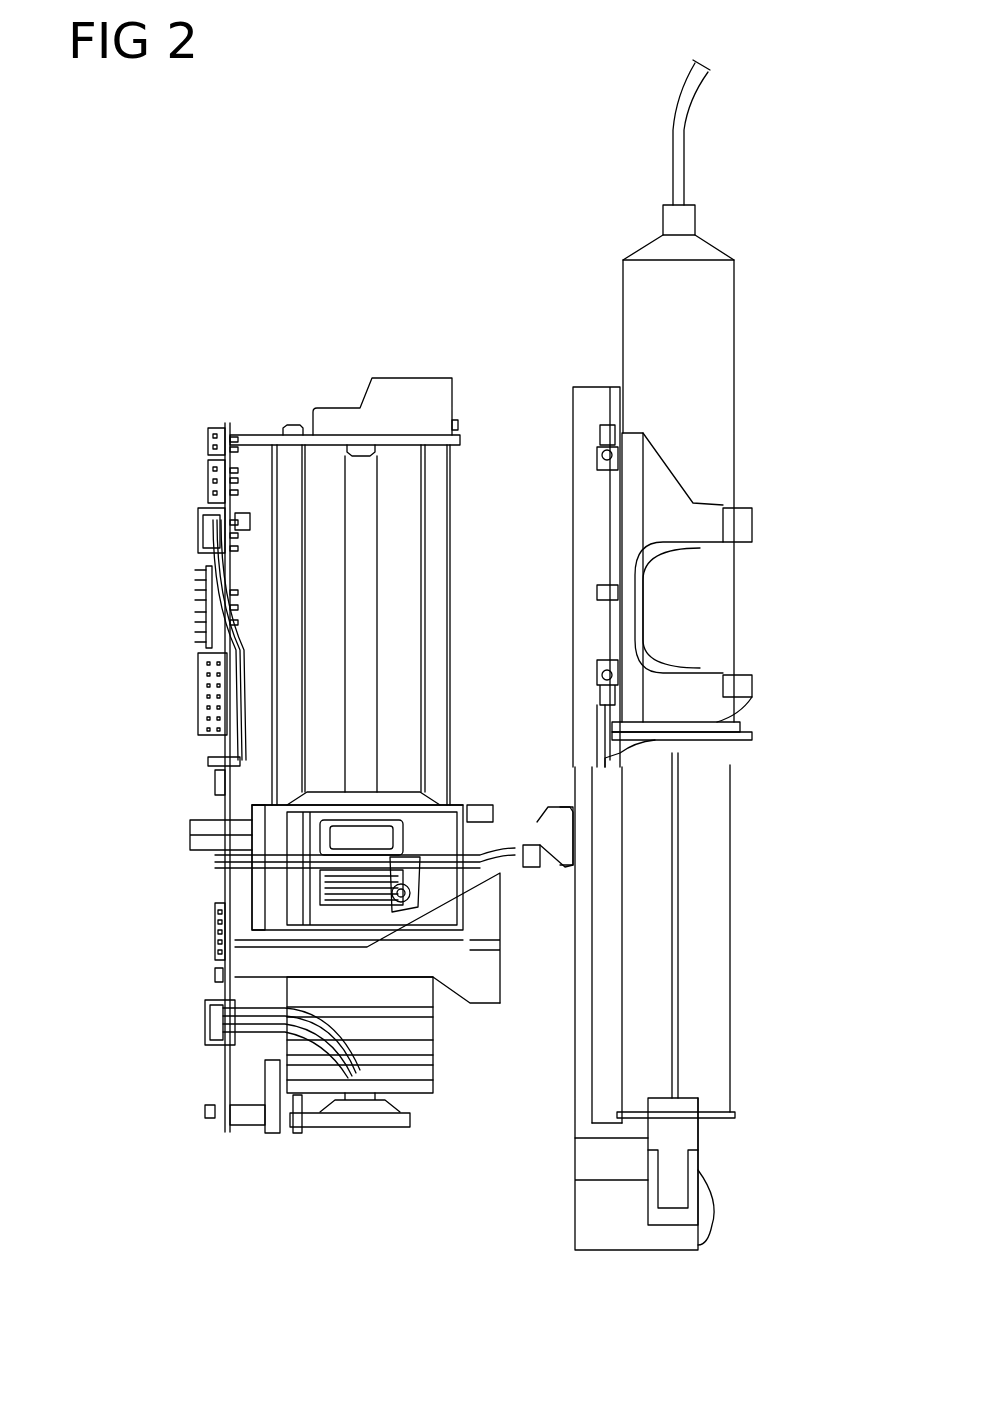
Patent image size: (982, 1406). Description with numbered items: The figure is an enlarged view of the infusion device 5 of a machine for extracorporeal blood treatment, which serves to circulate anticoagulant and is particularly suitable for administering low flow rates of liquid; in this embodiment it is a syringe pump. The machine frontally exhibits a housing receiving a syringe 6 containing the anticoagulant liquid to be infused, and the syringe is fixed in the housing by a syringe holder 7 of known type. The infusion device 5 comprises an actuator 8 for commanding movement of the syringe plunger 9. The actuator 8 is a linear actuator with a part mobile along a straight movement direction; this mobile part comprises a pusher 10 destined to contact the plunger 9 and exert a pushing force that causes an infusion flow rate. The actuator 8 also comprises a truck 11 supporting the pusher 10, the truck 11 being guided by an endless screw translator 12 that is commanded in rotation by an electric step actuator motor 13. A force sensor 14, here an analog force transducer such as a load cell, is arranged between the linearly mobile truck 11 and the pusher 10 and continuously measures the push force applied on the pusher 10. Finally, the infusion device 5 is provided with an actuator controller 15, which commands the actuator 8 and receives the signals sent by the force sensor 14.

The infusion device 5 is at (400, 245).
The syringe 6 is at (725, 352).
The syringe holder 7 is at (775, 515).
The actuator 8 is at (447, 1203).
The syringe plunger 9 is at (725, 915).
The pusher 10 is at (712, 1213).
The truck 11 is at (255, 915).
The endless screw translator 12 is at (355, 710).
The actuator motor 13 is at (260, 1075).
The force sensor 14 is at (522, 845).
The actuator controller 15 is at (160, 568).